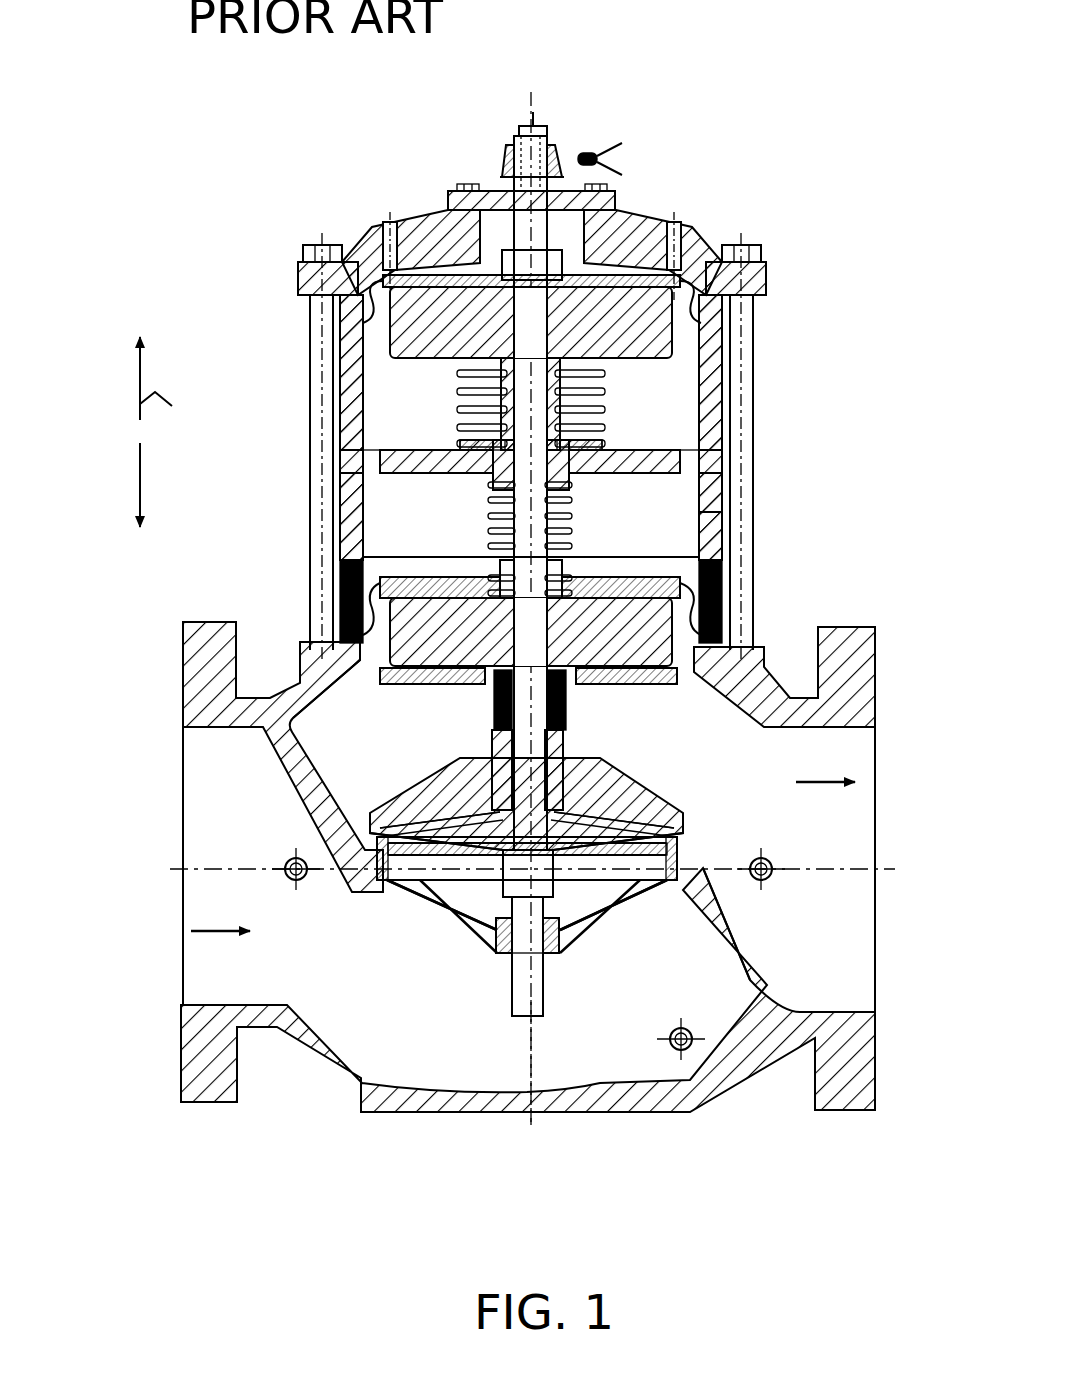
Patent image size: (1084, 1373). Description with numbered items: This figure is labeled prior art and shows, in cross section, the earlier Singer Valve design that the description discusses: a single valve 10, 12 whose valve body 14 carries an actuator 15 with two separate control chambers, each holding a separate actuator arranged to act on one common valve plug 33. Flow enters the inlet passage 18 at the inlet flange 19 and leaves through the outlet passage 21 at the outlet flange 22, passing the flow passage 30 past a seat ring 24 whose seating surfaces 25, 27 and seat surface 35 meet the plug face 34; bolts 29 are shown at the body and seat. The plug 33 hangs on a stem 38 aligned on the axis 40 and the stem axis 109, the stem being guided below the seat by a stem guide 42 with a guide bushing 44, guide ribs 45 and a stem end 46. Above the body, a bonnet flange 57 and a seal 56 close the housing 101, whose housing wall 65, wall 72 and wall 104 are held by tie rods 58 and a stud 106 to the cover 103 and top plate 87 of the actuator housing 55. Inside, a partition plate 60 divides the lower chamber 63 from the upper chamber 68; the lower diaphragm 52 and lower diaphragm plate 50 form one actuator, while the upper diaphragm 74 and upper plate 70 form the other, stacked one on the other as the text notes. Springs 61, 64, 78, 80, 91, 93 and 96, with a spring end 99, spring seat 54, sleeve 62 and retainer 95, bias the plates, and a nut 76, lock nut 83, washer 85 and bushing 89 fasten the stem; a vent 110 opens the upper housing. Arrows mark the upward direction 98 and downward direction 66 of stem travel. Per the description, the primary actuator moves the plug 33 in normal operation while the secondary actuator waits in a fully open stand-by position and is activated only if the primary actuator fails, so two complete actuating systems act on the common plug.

The control valve assembly 10 is at (789, 306).
The control valve 12 is at (789, 306).
The valve body 14 is at (247, 600).
The actuator 15 is at (270, 398).
The inlet passage 18 is at (532, 866).
The inlet flange 19 is at (210, 623).
The outlet passage 21 is at (855, 869).
The outlet flange 22 is at (868, 627).
The seat ring 24 is at (527, 860).
The seat 25 is at (677, 848).
The seat surface 27 is at (677, 848).
The bolts 29 is at (355, 884).
The flow passage 30 is at (696, 790).
The valve plug 33 is at (467, 806).
The plug seating surface 34 is at (446, 810).
The seat ring surface 35 is at (527, 863).
The valve stem 38 is at (522, 718).
The longitudinal axis 40 is at (533, 1066).
The stem guide 42 is at (484, 966).
The guide bushing 44 is at (507, 952).
The guide ribs 45 is at (470, 912).
The stem end 46 is at (548, 985).
The lower diaphragm plate 50 is at (335, 620).
The lower diaphragm 52 is at (436, 583).
The spring seat 54 is at (552, 592).
The actuator housing 55 is at (370, 186).
The seal 56 is at (722, 571).
The bonnet flange 57 is at (722, 628).
The tie rods 58 is at (306, 492).
The partition plate 60 is at (347, 460).
The spring 61 is at (565, 435).
The stem sleeve 62 is at (527, 503).
The lower chamber 63 is at (373, 516).
The lower spring 64 is at (575, 528).
The lower housing wall 65 is at (722, 514).
The downward direction 66 is at (140, 477).
The upper chamber 68 is at (531, 419).
The upper diaphragm plate 70 is at (413, 310).
The upper housing wall 72 is at (368, 372).
The upper diaphragm 74 is at (377, 333).
The stem nut 76 is at (512, 134).
The spring 78 is at (493, 405).
The spring 80 is at (493, 380).
The lock nut 83 is at (506, 170).
The washer 85 is at (508, 188).
The top plate 87 is at (616, 202).
The stem bushing 89 is at (500, 262).
The spring 91 is at (565, 410).
The spring 93 is at (565, 383).
The spring retainer 95 is at (570, 483).
The lower spring 96 is at (510, 590).
The upward direction 98 is at (175, 409).
The spring end 99 is at (465, 428).
The housing 101 is at (720, 422).
The cover 103 is at (658, 262).
The housing wall 104 is at (345, 378).
The stud 106 is at (385, 232).
The stem axis 109 is at (558, 142).
The vent 110 is at (620, 140).